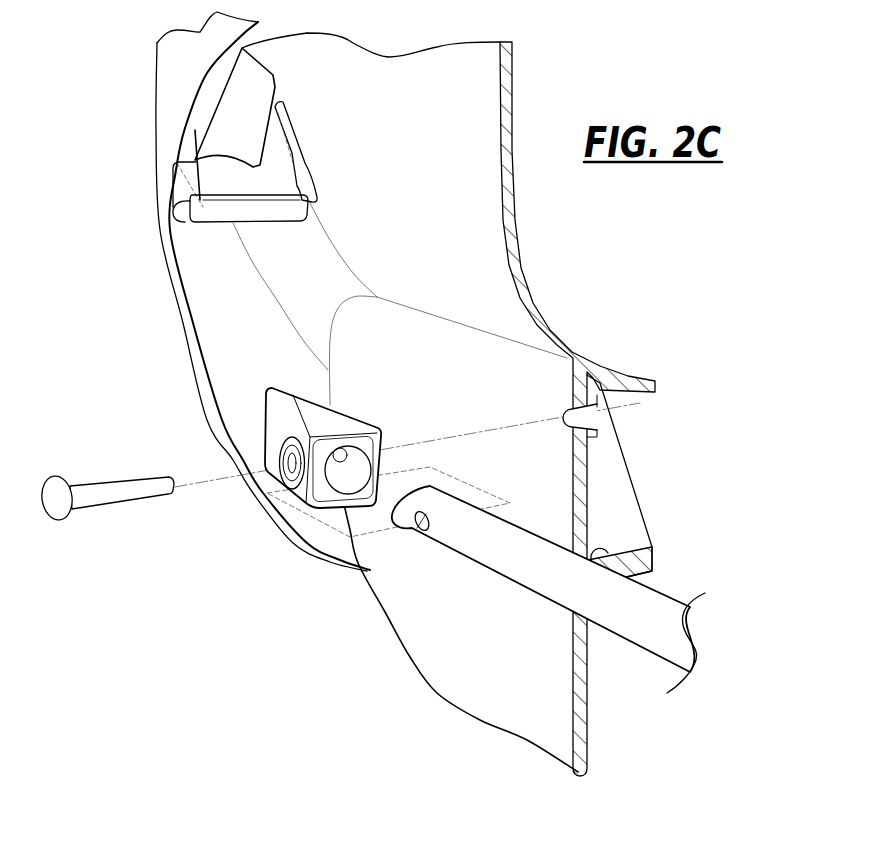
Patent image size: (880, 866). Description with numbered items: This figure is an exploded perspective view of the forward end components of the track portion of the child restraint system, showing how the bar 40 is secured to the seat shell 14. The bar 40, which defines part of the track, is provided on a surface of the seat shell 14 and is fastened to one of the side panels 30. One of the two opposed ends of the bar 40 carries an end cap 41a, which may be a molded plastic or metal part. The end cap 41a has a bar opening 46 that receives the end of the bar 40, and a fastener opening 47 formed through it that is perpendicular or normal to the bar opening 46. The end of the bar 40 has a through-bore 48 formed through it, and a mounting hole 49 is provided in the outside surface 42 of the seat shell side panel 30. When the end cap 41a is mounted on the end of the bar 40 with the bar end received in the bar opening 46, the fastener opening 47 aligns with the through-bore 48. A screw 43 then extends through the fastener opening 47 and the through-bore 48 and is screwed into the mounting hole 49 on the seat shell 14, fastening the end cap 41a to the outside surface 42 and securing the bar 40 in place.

The seat shell 14 is at (549, 290).
The side panel 30 is at (580, 473).
The bar 40 is at (655, 607).
The end cap 41a is at (282, 412).
The outside surface 42 is at (494, 640).
The screw 43 is at (108, 492).
The bar opening 46 is at (355, 475).
The fastener opening 47 is at (295, 462).
The through-bore 48 is at (420, 522).
The mounting hole 49 is at (603, 430).